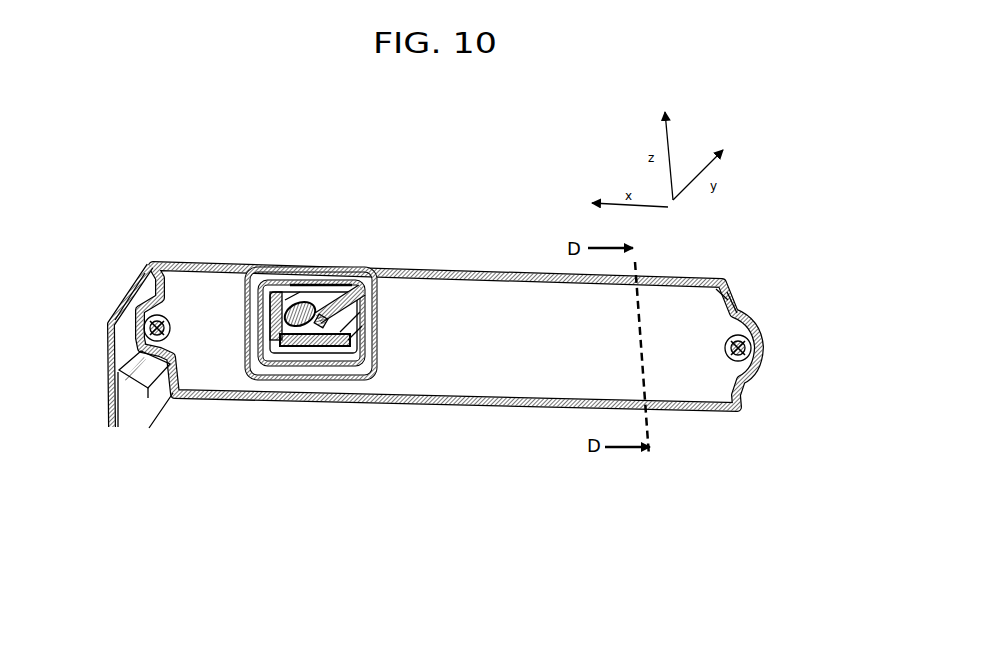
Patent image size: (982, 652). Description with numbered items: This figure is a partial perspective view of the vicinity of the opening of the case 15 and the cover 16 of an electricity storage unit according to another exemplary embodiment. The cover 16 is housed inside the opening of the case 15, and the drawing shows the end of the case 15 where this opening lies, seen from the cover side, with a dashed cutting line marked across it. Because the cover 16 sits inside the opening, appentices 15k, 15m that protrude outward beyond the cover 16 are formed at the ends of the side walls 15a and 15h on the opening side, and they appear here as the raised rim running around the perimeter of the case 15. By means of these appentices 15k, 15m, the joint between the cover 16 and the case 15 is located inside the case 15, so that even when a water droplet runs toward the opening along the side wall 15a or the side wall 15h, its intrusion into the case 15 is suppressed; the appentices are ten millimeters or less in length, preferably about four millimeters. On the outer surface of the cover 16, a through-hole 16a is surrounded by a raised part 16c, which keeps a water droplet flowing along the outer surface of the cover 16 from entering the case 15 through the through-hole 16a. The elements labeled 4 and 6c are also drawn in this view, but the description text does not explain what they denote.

The connector 4 is at (369, 268).
The corner portion 6c is at (723, 282).
The case 15 is at (190, 435).
The side wall 15a is at (133, 408).
The side wall 15h is at (193, 262).
The appentice 15k is at (448, 271).
The appentice 15m is at (153, 264).
The cover 16 is at (452, 318).
The through-hole 16a is at (284, 379).
The raised part 16c is at (311, 279).